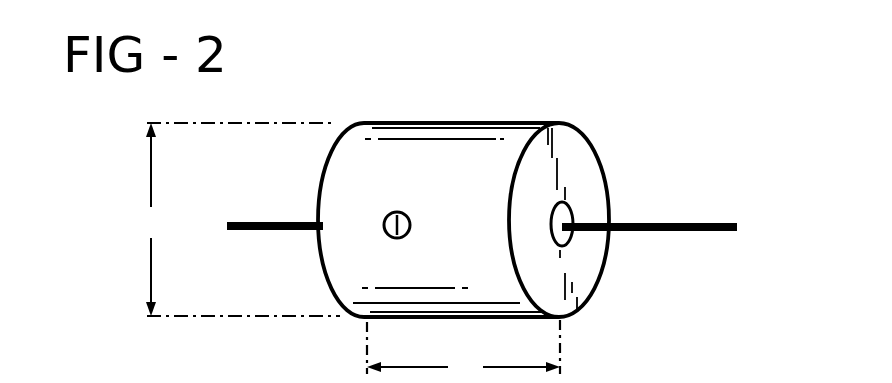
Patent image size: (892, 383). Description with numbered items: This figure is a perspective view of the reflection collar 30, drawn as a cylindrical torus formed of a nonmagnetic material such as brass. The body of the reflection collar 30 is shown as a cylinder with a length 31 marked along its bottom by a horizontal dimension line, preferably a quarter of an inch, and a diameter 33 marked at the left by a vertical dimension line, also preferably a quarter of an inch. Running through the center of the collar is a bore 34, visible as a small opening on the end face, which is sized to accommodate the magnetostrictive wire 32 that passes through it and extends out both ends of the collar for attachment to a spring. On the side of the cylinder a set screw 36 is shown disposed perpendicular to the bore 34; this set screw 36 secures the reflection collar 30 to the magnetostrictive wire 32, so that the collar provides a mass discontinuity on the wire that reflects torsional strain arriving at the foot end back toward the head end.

The reflection collar 30 is at (505, 117).
The length 31 is at (463, 350).
The magnetostrictive wire 32 is at (681, 221).
The housing diameter 33 is at (239, 219).
The bore 34 is at (570, 203).
The set screw 36 is at (384, 223).